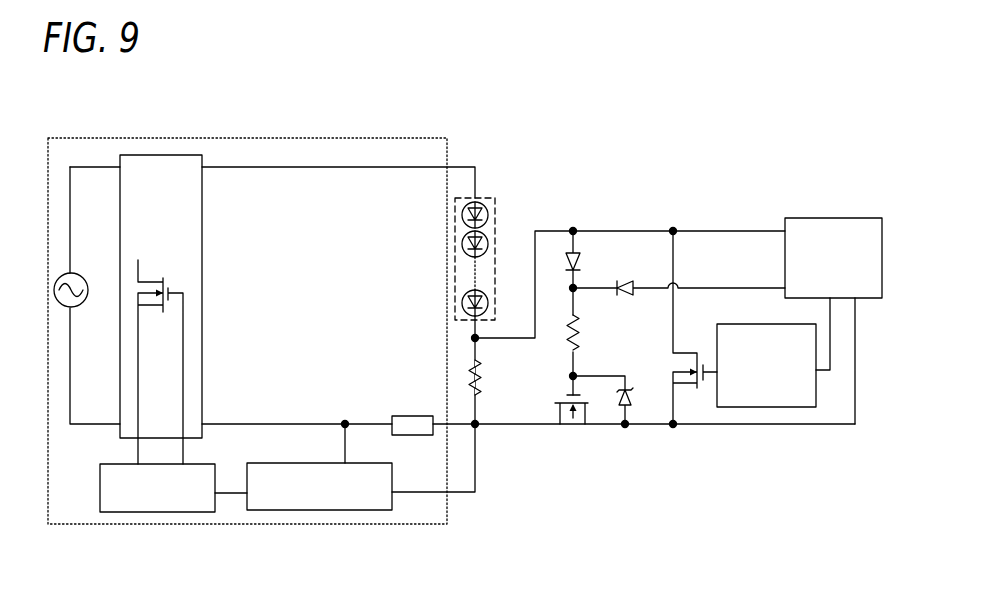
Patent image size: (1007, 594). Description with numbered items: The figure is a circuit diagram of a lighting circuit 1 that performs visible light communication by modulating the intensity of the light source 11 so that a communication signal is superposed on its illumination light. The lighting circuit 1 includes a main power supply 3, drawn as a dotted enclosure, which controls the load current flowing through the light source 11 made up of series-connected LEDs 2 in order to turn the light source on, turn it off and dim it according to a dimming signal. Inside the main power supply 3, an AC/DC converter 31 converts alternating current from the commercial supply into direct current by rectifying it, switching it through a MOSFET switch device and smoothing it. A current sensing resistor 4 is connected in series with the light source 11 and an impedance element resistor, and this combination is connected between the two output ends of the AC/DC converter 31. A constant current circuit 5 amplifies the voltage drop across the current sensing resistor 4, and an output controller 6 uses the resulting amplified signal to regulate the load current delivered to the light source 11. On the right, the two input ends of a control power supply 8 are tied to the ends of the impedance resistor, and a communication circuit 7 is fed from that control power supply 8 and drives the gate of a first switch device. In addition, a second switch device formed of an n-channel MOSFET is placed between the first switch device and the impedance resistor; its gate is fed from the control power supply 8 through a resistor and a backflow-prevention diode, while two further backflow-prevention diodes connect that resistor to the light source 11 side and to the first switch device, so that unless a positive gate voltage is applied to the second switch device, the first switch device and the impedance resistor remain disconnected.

The lighting circuit 1 is at (62, 124).
The LED 2 is at (500, 303).
The main power supply 3 is at (395, 137).
The current sensing resistor 4 is at (422, 414).
The constant current circuit 5 is at (328, 510).
The output controller 6 is at (165, 512).
The communication circuit 7 is at (768, 324).
The control power supply 8 is at (835, 218).
The light source 11 is at (487, 198).
The AC/DC converter 31 is at (202, 200).